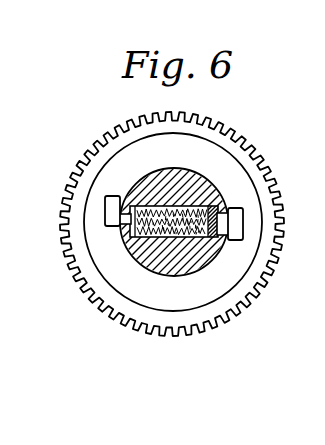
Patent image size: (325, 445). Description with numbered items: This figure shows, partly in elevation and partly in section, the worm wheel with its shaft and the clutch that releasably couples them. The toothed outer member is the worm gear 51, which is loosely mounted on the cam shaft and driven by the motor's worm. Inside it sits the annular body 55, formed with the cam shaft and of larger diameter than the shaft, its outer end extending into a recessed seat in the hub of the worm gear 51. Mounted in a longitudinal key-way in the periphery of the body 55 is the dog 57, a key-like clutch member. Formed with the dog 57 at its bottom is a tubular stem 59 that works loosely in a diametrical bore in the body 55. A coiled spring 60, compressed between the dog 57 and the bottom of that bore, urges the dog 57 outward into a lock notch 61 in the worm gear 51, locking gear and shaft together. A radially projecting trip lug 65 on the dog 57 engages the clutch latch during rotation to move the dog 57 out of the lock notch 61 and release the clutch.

The worm gear 51 is at (241, 133).
The annular body 55 is at (173, 185).
The dog 57 is at (220, 237).
The tubular stem 59 is at (133, 246).
The coiled spring 60 is at (141, 277).
The lock notch 61 is at (108, 203).
The trip lug 65 is at (242, 223).